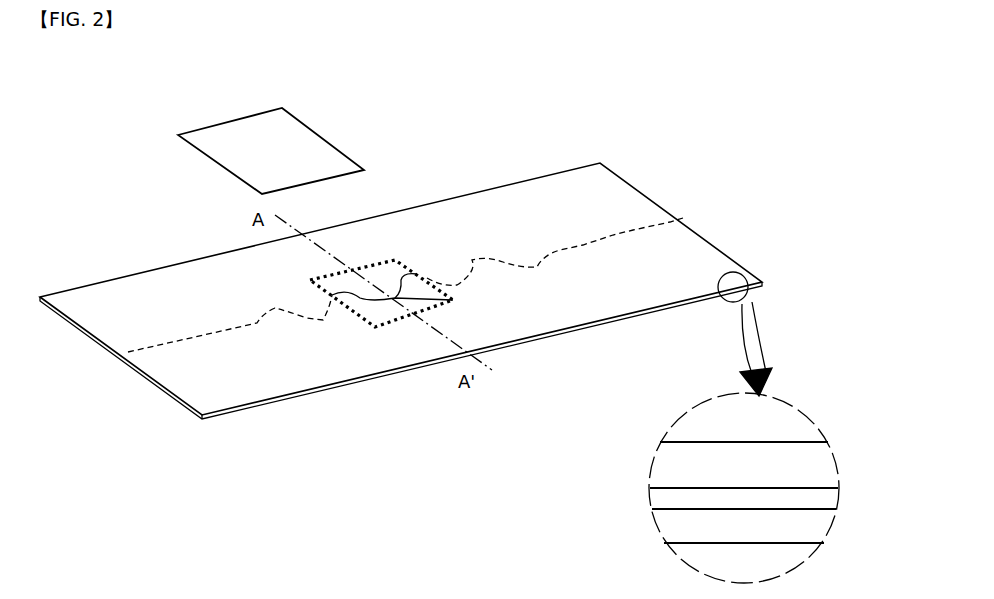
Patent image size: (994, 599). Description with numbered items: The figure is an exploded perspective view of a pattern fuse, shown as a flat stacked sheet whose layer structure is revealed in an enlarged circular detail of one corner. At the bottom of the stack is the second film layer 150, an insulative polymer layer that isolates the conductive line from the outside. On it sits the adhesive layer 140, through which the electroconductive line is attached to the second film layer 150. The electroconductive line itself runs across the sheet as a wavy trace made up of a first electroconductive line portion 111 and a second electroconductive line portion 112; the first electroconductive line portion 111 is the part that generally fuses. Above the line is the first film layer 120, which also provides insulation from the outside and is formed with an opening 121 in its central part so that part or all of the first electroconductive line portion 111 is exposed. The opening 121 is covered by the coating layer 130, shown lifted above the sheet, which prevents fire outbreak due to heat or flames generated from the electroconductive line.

The coating layer 130 is at (303, 143).
The opening 121 is at (446, 264).
The second electroconductive line portion 112 is at (405, 285).
The first electroconductive line portion 111 is at (417, 309).
The first film layer 120 is at (823, 467).
The adhesive layer 140 is at (823, 498).
The second film layer 150 is at (820, 527).